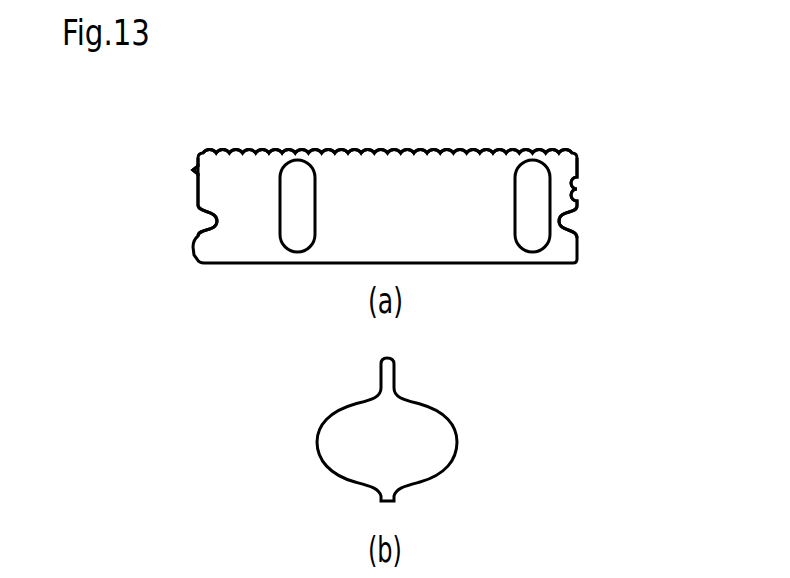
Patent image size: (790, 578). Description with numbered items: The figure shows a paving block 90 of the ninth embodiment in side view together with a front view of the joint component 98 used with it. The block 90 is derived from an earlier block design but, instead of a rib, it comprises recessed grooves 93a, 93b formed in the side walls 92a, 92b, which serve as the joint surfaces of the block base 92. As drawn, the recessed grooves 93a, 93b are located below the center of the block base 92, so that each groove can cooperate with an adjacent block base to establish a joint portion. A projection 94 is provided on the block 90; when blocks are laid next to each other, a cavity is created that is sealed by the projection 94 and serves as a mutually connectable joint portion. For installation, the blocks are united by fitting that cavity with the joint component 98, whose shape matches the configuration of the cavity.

The block 90 is at (524, 132).
The block base 92 is at (405, 162).
The side wall 92a is at (584, 164).
The side wall 92b is at (186, 165).
The recessed groove 93a is at (570, 218).
The recessed groove 93b is at (208, 217).
The projection 94 is at (194, 171).
The joint component 98 is at (475, 416).